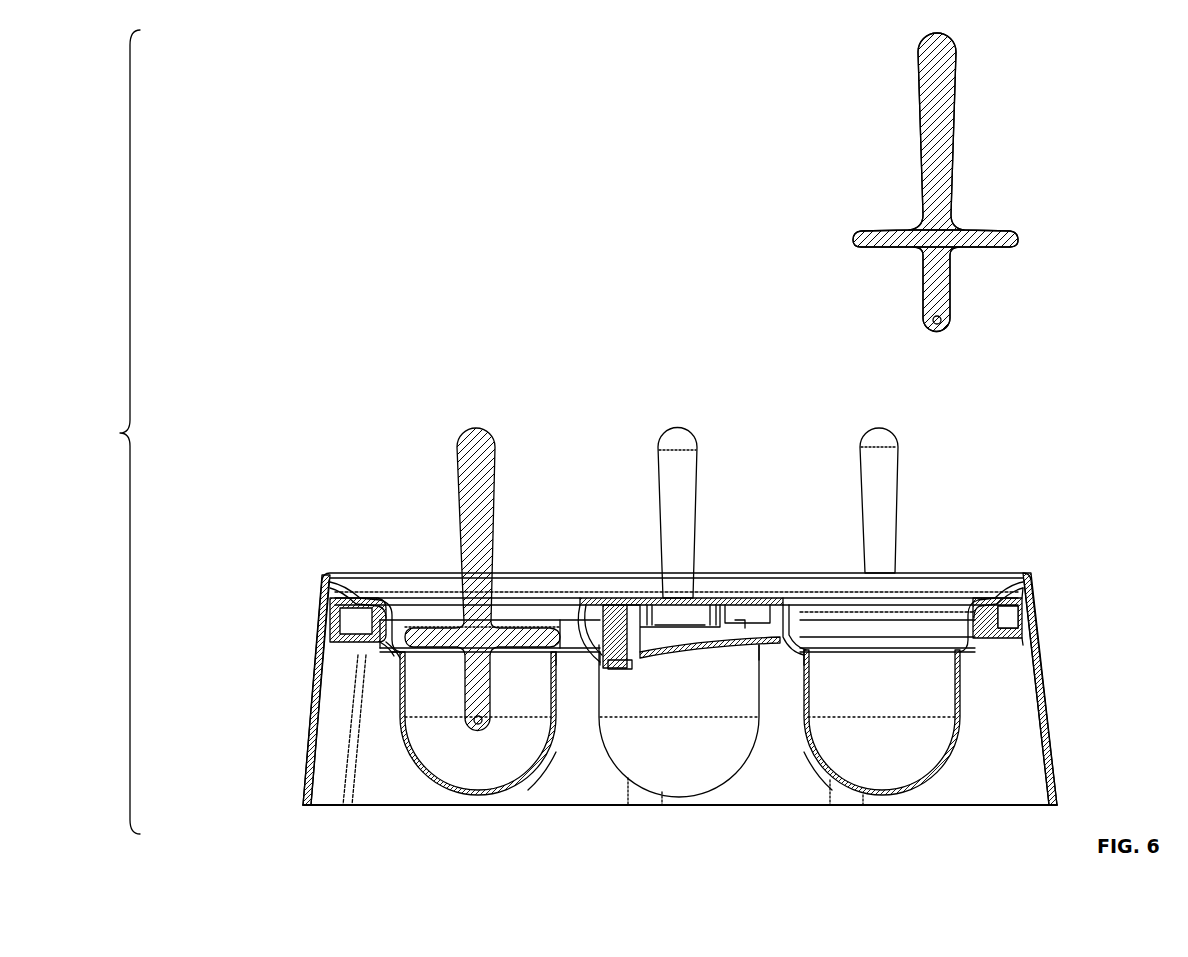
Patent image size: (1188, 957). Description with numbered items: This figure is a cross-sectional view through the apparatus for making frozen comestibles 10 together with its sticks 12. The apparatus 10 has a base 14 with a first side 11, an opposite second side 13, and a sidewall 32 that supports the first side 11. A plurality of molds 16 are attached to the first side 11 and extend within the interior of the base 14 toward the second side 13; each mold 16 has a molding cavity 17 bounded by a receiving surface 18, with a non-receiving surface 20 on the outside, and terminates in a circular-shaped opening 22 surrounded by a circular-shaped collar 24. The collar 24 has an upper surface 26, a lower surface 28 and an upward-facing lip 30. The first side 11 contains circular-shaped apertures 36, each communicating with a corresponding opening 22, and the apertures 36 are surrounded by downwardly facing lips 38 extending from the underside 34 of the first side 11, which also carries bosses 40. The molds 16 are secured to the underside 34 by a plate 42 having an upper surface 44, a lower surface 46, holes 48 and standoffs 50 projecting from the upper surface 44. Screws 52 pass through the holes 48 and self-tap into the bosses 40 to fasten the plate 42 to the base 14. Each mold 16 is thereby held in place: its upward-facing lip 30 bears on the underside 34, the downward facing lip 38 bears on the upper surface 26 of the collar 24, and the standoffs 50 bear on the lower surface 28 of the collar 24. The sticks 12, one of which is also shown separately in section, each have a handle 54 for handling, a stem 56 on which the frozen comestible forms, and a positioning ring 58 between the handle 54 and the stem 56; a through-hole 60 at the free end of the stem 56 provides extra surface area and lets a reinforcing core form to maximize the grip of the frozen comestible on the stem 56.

The apparatus for making frozen comestibles 10 is at (338, 334).
The first side 11 is at (1012, 575).
The stick 12 is at (757, 382).
The second side 13 is at (1020, 806).
The base 14 is at (638, 713).
The mold 16 is at (675, 752).
The molding cavity 17 is at (440, 754).
The receiving surface 18 is at (447, 782).
The non-receiving surface 20 is at (556, 760).
The circular-shaped opening 22 is at (435, 658).
The circular-shaped collar 24 is at (405, 665).
The upper surface 26 is at (800, 640).
The lower surface 28 is at (395, 660).
The upward-facing lip 30 is at (1030, 598).
The sidewall 32 is at (1055, 772).
The underside 34 is at (640, 600).
The circular-shaped aperture 36 is at (445, 616).
The downwardly facing lip 38 is at (386, 605).
The boss 40 is at (580, 603).
The plate 42 is at (362, 640).
The upper surface 44 is at (674, 617).
The lower surface 46 is at (1005, 640).
The hole 48 is at (624, 666).
The standoff 50 is at (338, 608).
The screw 52 is at (606, 666).
The handle 54 is at (955, 120).
The stem 56 is at (950, 290).
The positioning ring 58 is at (1000, 232).
The through-hole 60 is at (942, 332).